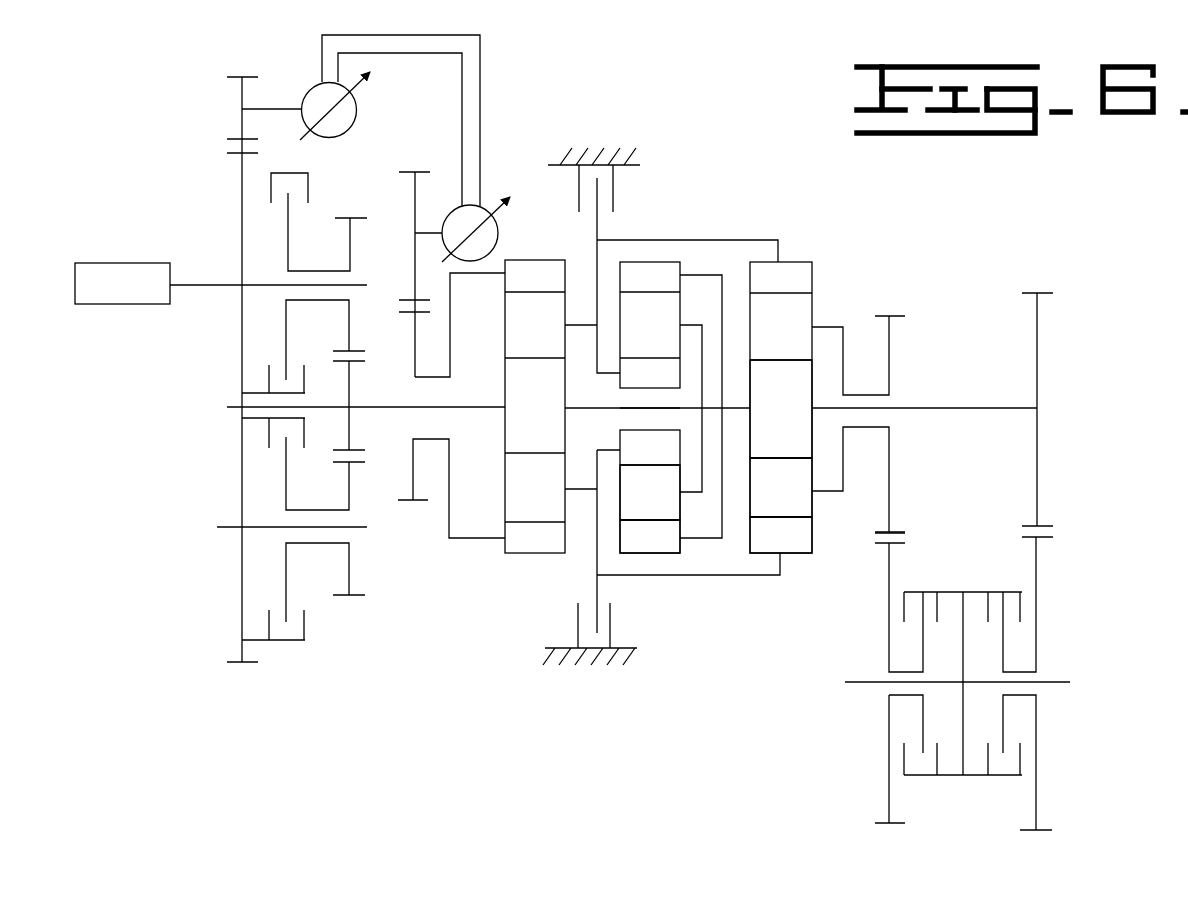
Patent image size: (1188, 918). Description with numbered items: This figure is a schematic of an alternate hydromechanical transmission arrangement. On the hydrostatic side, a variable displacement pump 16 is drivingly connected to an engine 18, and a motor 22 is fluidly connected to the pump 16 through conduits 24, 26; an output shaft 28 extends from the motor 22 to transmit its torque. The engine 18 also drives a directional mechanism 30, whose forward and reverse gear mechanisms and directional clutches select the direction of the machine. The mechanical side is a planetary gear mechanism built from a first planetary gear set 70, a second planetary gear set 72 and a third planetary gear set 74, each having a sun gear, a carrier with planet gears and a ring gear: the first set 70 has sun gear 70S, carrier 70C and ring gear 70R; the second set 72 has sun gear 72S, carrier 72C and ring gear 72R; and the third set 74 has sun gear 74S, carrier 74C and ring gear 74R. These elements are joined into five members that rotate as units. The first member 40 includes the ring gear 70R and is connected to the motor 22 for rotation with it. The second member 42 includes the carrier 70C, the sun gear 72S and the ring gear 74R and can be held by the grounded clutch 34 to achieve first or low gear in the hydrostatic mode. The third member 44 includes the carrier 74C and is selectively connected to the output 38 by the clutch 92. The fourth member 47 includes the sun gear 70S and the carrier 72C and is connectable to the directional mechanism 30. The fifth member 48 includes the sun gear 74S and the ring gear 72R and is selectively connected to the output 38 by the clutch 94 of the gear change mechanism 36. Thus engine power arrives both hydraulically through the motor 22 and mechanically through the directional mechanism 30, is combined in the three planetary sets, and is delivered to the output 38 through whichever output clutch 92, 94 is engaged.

The variable displacement pump 16 is at (306, 88).
The engine 18 is at (135, 262).
The motor 22 is at (487, 197).
The conduit 24 is at (462, 108).
The conduit 26 is at (482, 152).
The output shaft 28 is at (423, 233).
The directional mechanism 30 is at (202, 437).
The grounded clutch 34 is at (578, 204).
The gear change mechanism 36 is at (982, 708).
The output 38 is at (1068, 682).
The first member 40 is at (500, 275).
The second member 42 is at (736, 240).
The third member 44 is at (893, 340).
The fourth member 47 is at (407, 407).
The fifth member 48 is at (1008, 410).
The first planetary gear set 70 is at (574, 446).
The sun gear 70S is at (515, 402).
The carrier 70C is at (515, 492).
The ring gear 70R is at (515, 540).
The second planetary gear set 72 is at (658, 470).
The sun gear 72S is at (634, 380).
The carrier 72C is at (650, 492).
The ring gear 72R is at (676, 540).
The third planetary gear set 74 is at (733, 476).
The sun gear 74S is at (781, 409).
The carrier 74C is at (781, 487).
The ring gear 74R is at (808, 540).
The clutch 92 is at (923, 592).
The clutch 94 is at (1003, 592).